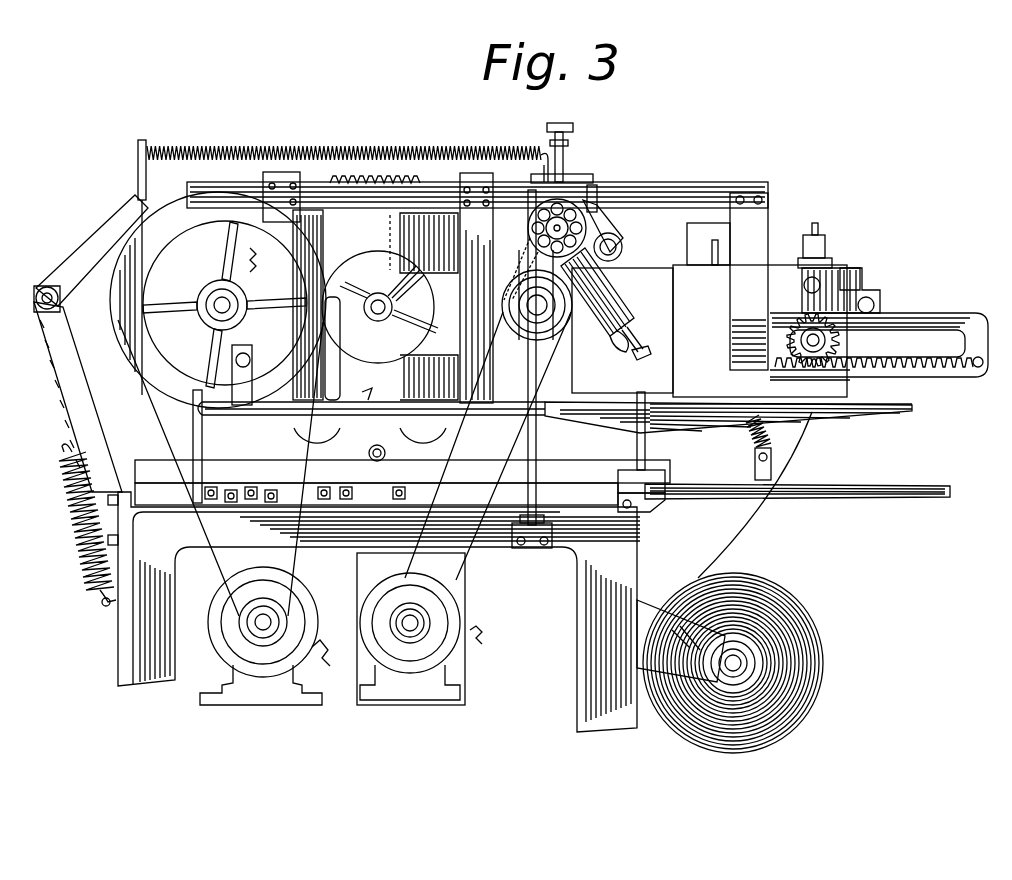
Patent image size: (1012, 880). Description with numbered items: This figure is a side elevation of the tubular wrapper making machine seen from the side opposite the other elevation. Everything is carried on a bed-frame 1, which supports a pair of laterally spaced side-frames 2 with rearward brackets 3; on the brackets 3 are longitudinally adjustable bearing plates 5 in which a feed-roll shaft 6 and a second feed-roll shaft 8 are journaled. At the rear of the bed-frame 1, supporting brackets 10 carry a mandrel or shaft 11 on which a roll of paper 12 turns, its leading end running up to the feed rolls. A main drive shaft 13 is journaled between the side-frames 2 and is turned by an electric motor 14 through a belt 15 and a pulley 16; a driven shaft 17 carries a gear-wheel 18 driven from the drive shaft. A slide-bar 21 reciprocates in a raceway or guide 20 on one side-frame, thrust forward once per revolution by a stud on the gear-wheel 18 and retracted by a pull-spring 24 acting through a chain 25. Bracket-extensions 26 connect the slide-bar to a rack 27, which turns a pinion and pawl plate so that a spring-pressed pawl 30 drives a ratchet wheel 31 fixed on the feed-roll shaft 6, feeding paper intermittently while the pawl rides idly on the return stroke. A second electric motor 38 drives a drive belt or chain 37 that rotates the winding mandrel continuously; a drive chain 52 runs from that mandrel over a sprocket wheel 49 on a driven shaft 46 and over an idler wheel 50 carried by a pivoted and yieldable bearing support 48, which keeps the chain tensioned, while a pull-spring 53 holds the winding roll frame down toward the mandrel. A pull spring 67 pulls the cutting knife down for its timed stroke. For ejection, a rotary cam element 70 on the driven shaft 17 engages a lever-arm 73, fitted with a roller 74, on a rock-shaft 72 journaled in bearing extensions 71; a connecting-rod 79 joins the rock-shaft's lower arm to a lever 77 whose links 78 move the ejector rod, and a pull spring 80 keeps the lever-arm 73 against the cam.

The bed-frame 1 is at (120, 632).
The side-frames 2 is at (370, 444).
The brackets 3 is at (908, 406).
The bearing plates 5 is at (845, 278).
The feed-roll shaft 6 is at (830, 335).
The second feed-roll shaft 8 is at (818, 282).
The supporting brackets 10 is at (680, 690).
The mandrel or shaft 11 is at (745, 657).
The roll of paper 12 is at (755, 574).
The main drive shaft 13 is at (215, 300).
The electric motor 14 is at (300, 603).
The belt 15 is at (215, 576).
The pulley 16 is at (112, 290).
The driven shaft 17 is at (390, 306).
The gear-wheel 18 is at (420, 182).
The raceway or guide 20 is at (306, 188).
The slide-bar 21 is at (650, 190).
The pull-spring 24 is at (70, 512).
The chain 25 is at (62, 283).
The bracket-extensions 26 is at (766, 226).
The rack 27 is at (946, 350).
The spring-pressed pawl 30 is at (836, 368).
The ratchet wheel 31 is at (850, 336).
The drive belt or chain 37 is at (510, 530).
The electric motor 38 is at (446, 616).
The driven shaft 46 is at (533, 180).
The pivoted and yieldable bearing support 48 is at (606, 295).
The sprocket wheel 49 is at (592, 200).
The idler wheel 50 is at (622, 251).
The drive chain 52 is at (588, 232).
The pull-spring 53 is at (303, 148).
The pull spring 67 is at (750, 438).
The rotary cam element 70 is at (428, 322).
The bearing extensions 71 is at (195, 432).
The rock-shaft 72 is at (365, 392).
The lever-arm 73 is at (340, 333).
The roller 74 is at (352, 288).
The lever 77 is at (536, 438).
The links 78 is at (525, 318).
The link member or connecting-rod 79 is at (545, 478).
The pull spring 80 is at (232, 352).